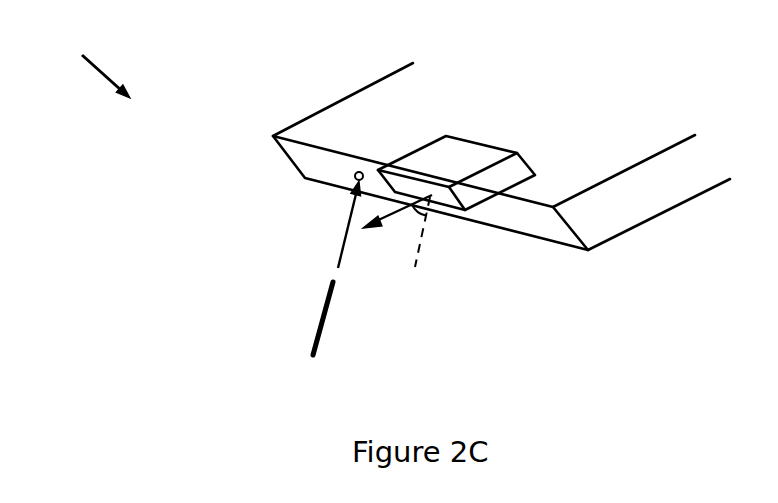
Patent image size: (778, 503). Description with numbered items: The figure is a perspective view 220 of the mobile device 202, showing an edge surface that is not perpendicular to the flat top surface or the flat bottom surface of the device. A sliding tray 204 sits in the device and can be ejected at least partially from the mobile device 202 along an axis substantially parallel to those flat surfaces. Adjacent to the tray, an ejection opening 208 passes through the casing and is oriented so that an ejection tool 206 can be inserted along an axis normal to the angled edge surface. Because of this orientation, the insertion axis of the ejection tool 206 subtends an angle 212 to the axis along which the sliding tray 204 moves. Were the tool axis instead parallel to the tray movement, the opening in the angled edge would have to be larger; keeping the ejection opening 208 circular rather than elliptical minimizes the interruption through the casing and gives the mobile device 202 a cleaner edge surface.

The perspective view 220 is at (86, 66).
The mobile device 202 is at (341, 100).
The sliding tray 204 is at (446, 135).
The ejection tool 206 is at (323, 313).
The ejection opening 208 is at (355, 177).
The angle 212 is at (412, 220).